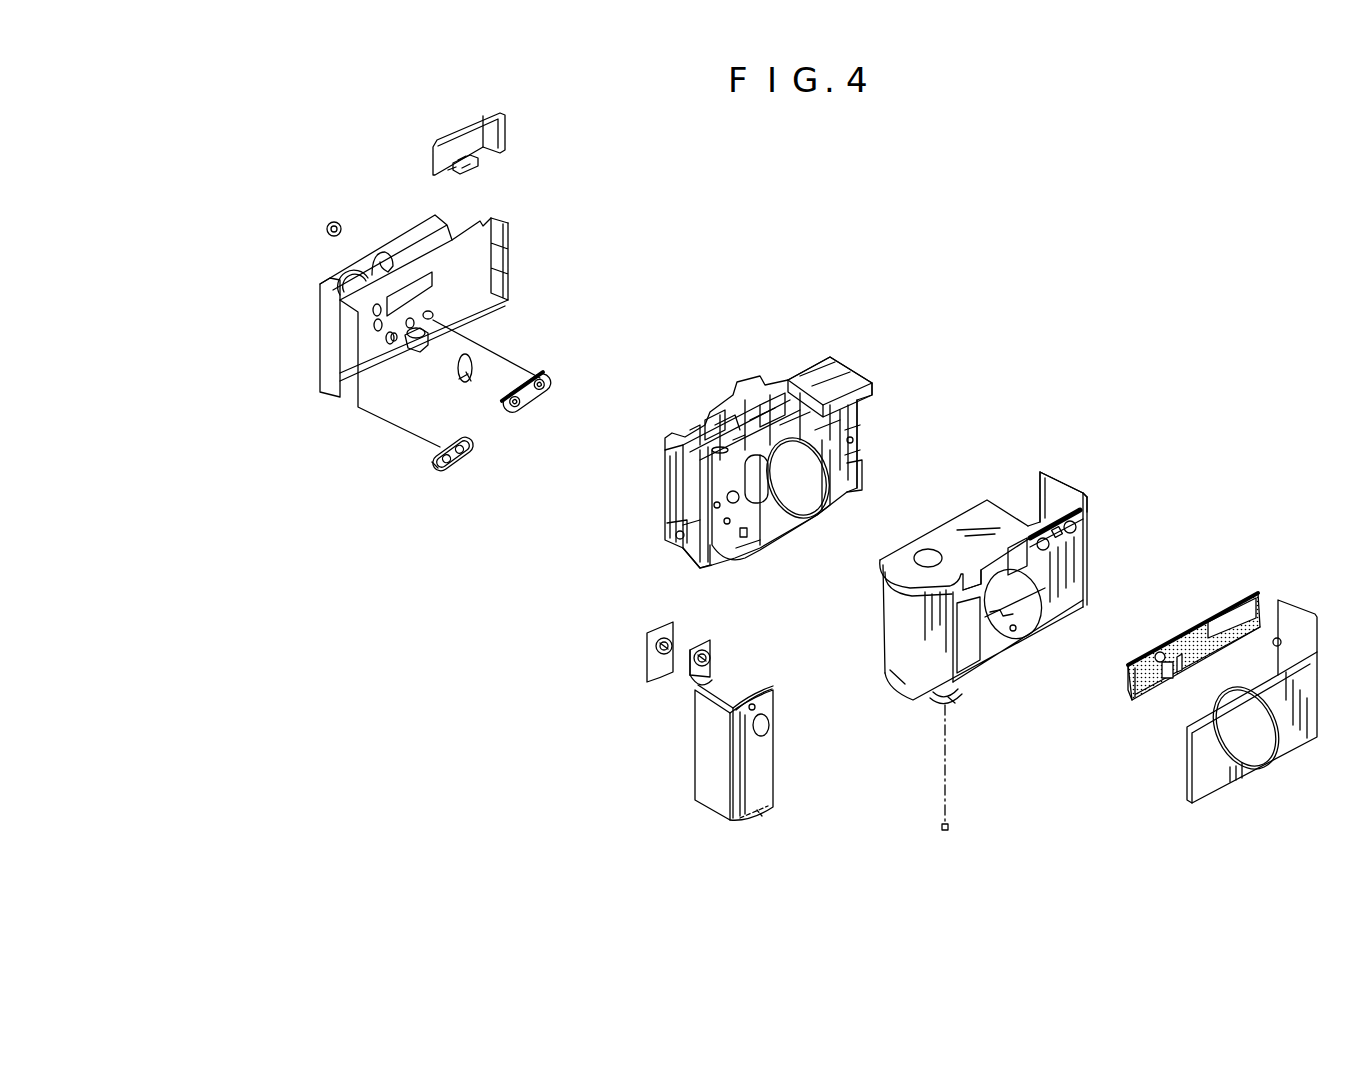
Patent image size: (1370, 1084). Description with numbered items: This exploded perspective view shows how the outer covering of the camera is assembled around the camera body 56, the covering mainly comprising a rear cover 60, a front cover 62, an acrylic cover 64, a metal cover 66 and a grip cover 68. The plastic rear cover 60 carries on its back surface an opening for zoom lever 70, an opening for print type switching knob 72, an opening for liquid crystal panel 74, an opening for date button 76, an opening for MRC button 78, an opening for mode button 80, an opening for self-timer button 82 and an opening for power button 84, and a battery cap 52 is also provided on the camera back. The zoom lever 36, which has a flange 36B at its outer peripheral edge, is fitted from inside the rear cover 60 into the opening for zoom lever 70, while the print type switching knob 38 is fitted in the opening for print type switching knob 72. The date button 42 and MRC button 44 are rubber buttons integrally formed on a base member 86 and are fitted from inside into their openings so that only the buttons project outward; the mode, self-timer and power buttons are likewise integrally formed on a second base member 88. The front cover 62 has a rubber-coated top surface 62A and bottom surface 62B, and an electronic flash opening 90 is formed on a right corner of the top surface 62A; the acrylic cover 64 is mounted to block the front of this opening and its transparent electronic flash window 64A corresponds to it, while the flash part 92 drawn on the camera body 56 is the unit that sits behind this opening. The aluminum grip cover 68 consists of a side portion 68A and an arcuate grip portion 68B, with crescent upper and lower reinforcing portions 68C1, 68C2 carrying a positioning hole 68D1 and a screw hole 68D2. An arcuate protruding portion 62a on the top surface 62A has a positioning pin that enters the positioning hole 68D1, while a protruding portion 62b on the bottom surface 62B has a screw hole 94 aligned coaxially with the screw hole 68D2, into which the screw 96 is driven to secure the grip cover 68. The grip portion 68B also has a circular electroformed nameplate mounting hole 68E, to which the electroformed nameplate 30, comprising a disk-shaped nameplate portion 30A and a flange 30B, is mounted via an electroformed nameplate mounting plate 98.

The electroformed nameplate 30 is at (684, 654).
The nameplate portion 30A is at (690, 683).
The flange 30B is at (688, 645).
The zoom lever 36 is at (460, 471).
The flange 36B is at (436, 466).
The print type switching knob 38 is at (361, 248).
The date button 42 is at (472, 358).
The MRC button 44 is at (457, 378).
The battery cap 52 is at (492, 130).
The camera body 56 is at (746, 438).
The rear cover 60 is at (389, 323).
The front cover 62 is at (1013, 619).
The top surface (top cover) 62A is at (973, 522).
The bottom surface (bottom cover) 62B is at (1000, 672).
The protruding portion 62a is at (949, 571).
The protruding portion 62b is at (949, 705).
The acrylic cover (window member) 64 is at (1224, 602).
The electronic flash window 64A is at (1252, 598).
The metal cover 66 is at (1200, 812).
The grip cover 68 is at (735, 768).
The side portion 68A is at (700, 763).
The grip portion 68B is at (770, 777).
The upper reinforcing portion 68C1 is at (776, 692).
The lower reinforcing portion 68C2 is at (745, 823).
The positioning hole 68D1 is at (753, 704).
The screw hole 68D2 is at (762, 818).
The electroformed nameplate mounting hole 68E is at (771, 722).
The opening for zoom lever 70 is at (350, 293).
The opening for print type switching knob 72 is at (384, 255).
The opening for liquid crystal panel 74 is at (435, 290).
The opening for date button 76 is at (373, 318).
The opening for MRC button 78 is at (386, 342).
The opening for mode button 80 is at (433, 324).
The opening for self-timer button 82 is at (411, 353).
The opening for power button 84 is at (393, 339).
The base member 86 is at (469, 380).
The base member 88 is at (547, 400).
The electronic flash opening 90 is at (1050, 487).
The flash unit 92 is at (846, 373).
The screw hole 94 is at (934, 708).
The screw 96 is at (950, 828).
The electroformed nameplate mounting plate 98 is at (660, 633).